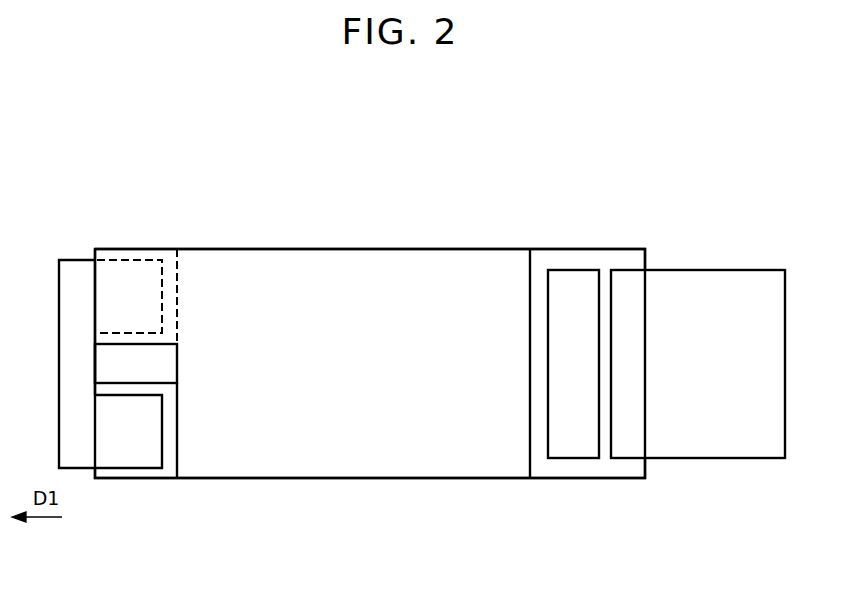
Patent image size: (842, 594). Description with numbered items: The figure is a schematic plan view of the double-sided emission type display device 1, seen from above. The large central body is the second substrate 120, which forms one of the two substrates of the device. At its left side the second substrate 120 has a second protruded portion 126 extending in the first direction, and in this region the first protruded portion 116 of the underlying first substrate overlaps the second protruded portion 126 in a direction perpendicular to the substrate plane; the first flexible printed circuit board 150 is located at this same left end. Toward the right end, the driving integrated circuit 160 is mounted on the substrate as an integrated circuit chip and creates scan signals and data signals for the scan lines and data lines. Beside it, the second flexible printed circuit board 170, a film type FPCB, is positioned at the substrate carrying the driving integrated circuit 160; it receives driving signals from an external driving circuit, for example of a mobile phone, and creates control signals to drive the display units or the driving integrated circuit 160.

The double-sided emission type display device 1 is at (640, 173).
The second substrate 120 is at (355, 257).
The first flexible printed circuit board 150 is at (77, 265).
The second protruded portion 126 is at (171, 266).
The first protruded portion 116 is at (168, 466).
The driving integrated circuit 160 is at (577, 275).
The second flexible printed circuit board 170 is at (703, 278).